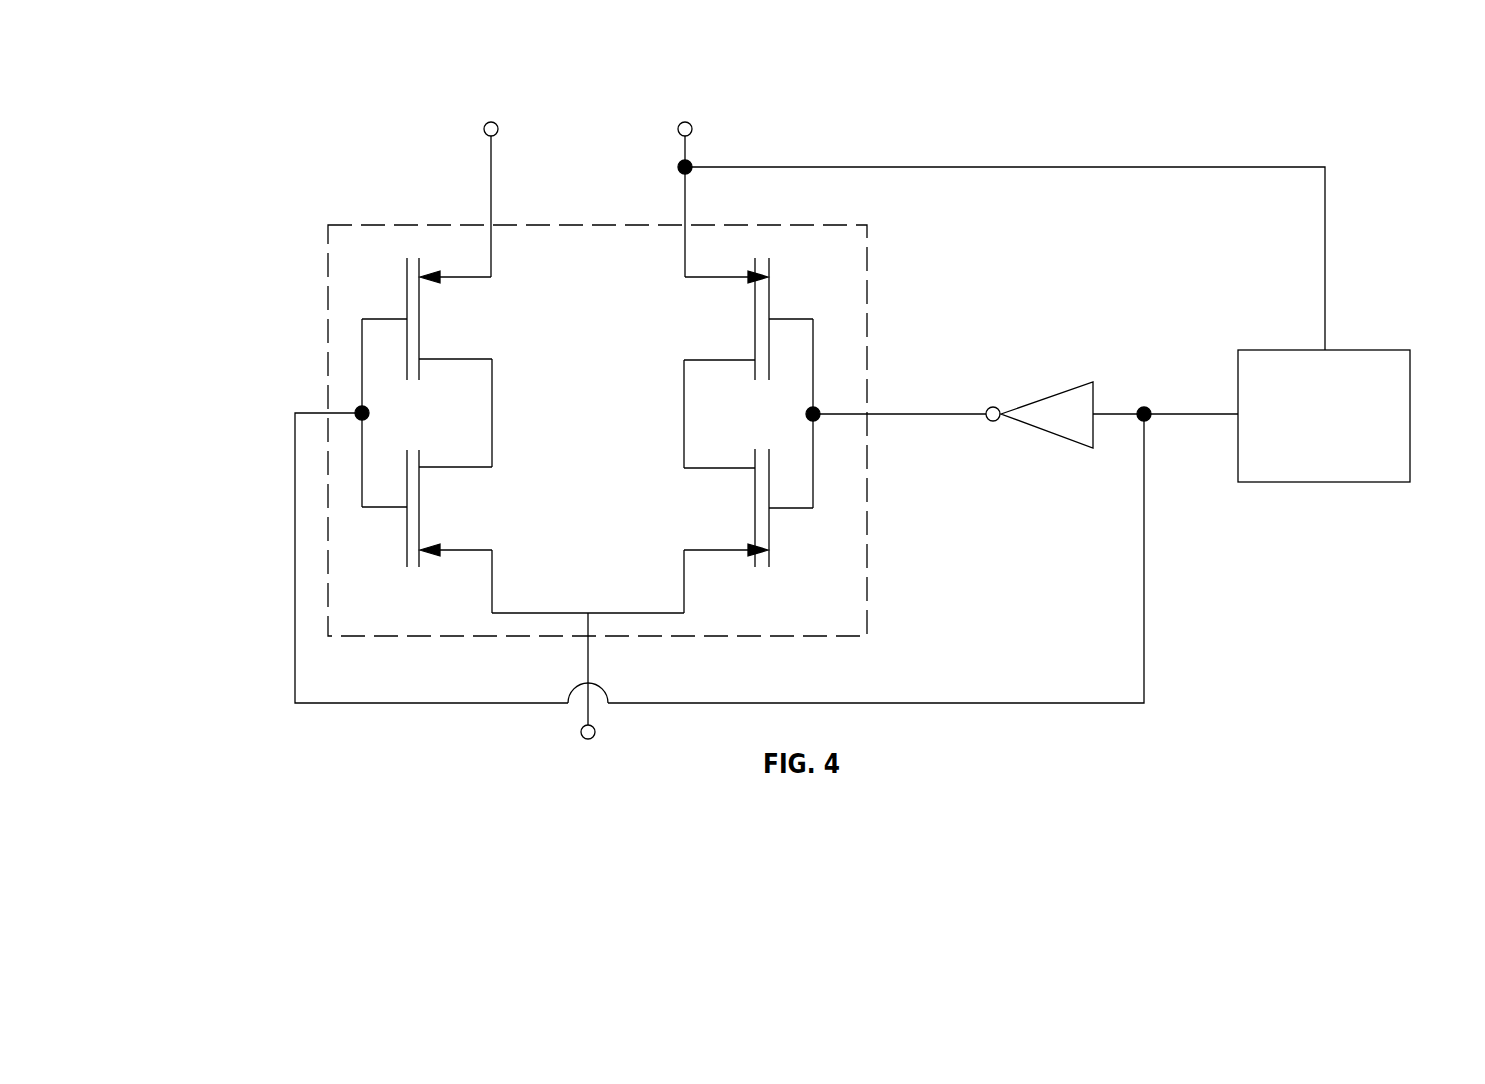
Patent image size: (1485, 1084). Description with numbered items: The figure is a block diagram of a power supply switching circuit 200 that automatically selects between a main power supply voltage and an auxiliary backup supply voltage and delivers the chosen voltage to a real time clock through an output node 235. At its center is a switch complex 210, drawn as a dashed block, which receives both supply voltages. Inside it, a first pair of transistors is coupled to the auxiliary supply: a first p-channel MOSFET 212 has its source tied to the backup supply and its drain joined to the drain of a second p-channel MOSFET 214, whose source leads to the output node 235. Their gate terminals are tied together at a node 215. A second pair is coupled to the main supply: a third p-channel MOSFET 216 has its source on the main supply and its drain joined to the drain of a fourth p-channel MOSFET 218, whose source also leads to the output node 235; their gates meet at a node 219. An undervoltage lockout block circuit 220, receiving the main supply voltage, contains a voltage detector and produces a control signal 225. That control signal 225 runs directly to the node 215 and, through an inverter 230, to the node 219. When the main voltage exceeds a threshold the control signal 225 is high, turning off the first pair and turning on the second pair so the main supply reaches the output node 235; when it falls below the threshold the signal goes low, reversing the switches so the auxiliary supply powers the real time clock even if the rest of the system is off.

The power supply switching circuit 200 is at (297, 184).
The switch complex 210 is at (648, 428).
The first p-channel MOSFET 212 is at (445, 319).
The second p-channel MOSFET 214 is at (445, 508).
The node 215 is at (306, 393).
The third p-channel MOSFET 216 is at (728, 319).
The fourth p-channel MOSFET 218 is at (728, 508).
The node 219 is at (896, 373).
The undervoltage lockout block circuit 220 is at (1347, 386).
The control signal 225 is at (1195, 362).
The inverter 230 is at (1060, 394).
The output node 235 is at (545, 693).